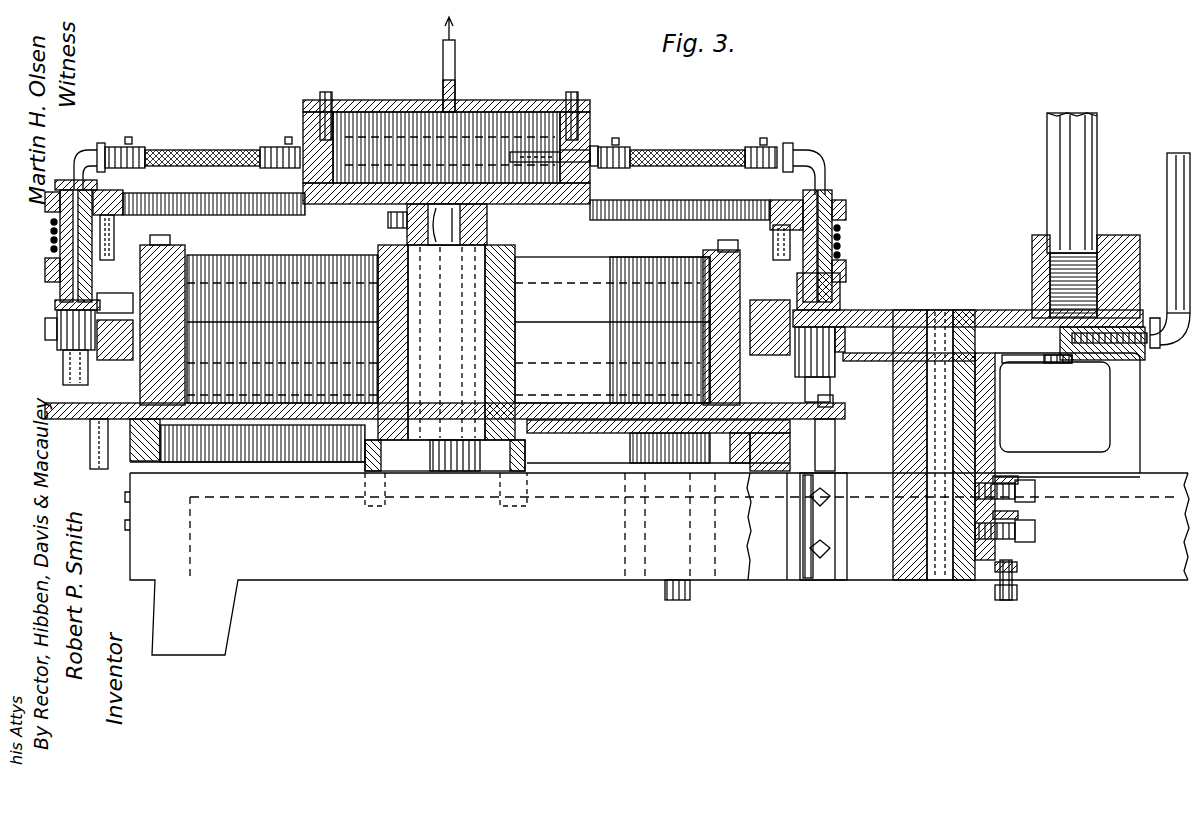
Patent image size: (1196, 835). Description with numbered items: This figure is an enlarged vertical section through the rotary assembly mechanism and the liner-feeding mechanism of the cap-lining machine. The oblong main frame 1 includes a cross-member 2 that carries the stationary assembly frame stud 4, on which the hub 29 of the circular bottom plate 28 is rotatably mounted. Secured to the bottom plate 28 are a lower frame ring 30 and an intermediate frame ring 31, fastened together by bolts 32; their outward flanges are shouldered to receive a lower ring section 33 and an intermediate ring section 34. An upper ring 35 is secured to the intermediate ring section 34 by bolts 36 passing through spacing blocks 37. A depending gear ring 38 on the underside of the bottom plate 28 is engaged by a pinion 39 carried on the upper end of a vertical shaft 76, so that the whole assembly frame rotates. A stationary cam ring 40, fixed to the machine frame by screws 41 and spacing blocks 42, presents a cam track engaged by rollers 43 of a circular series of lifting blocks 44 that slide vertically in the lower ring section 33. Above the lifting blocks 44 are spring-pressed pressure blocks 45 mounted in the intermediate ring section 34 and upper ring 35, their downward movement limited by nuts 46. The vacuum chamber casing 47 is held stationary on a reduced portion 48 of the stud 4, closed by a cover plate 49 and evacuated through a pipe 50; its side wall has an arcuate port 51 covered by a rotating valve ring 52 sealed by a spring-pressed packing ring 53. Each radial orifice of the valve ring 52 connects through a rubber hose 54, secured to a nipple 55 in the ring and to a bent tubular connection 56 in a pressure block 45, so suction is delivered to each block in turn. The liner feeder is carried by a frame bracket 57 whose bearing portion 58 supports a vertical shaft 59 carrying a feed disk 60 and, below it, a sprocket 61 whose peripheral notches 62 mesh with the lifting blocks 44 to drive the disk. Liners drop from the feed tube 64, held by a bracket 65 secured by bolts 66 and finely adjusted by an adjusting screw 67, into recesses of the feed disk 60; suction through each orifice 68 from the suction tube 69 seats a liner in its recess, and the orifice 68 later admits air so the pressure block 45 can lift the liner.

The main frame 1 is at (368, 570).
The cross-member 2 is at (402, 455).
The assembly frame stud 4 is at (425, 432).
The bottom plate 28 is at (332, 404).
The hub 29 is at (380, 350).
The lower frame ring 30 is at (453, 330).
The intermediate frame ring 31 is at (282, 329).
The bolts 32 is at (186, 258).
The lower ring section 33 is at (60, 344).
The intermediate ring section 34 is at (46, 282).
The upper ring 35 is at (46, 206).
The bolts 36 is at (118, 193).
The spacing blocks 37 is at (116, 228).
The gear ring 38 is at (170, 462).
The pinion 39 is at (640, 445).
The cam ring 40 is at (60, 404).
The screws 41 is at (835, 402).
The spacing blocks 42 is at (90, 440).
The rollers 43 is at (88, 382).
The lifting blocks 44 is at (48, 326).
The pressure blocks 45 is at (55, 306).
The nuts 46 is at (60, 182).
The casing 47 is at (325, 198).
The reduced portion 48 is at (487, 228).
The cover plate 49 is at (380, 100).
The pipe 50 is at (456, 50).
The arcuate port 51 is at (540, 153).
The valve ring 52 is at (598, 152).
The packing ring 53 is at (590, 122).
The rubber hose 54 is at (200, 150).
The nipple 55 is at (272, 147).
The bent tubular connection 56 is at (84, 150).
The frame bracket 57 is at (842, 578).
The bearing portion 58 is at (996, 428).
The vertical shaft 59 is at (928, 582).
The feed disk 60 is at (905, 306).
The sprocket 61 is at (1060, 363).
The peripheral notches 62 is at (1008, 363).
The feed tube 64 is at (1098, 207).
The bracket 65 is at (1140, 392).
The bolts 66 is at (1037, 530).
The adjusting screw 67 is at (1018, 602).
The orifice 68 is at (1032, 312).
The suction tube 69 is at (1060, 338).
The vertical shaft 76 is at (665, 592).